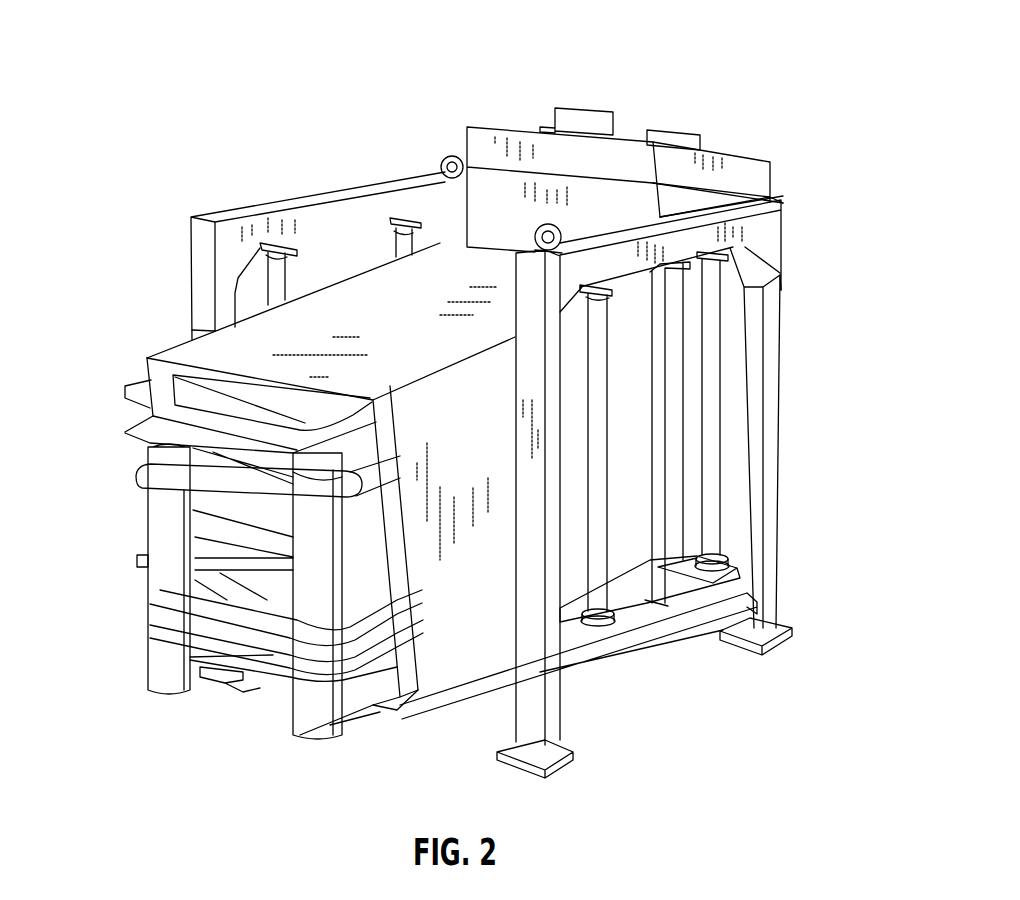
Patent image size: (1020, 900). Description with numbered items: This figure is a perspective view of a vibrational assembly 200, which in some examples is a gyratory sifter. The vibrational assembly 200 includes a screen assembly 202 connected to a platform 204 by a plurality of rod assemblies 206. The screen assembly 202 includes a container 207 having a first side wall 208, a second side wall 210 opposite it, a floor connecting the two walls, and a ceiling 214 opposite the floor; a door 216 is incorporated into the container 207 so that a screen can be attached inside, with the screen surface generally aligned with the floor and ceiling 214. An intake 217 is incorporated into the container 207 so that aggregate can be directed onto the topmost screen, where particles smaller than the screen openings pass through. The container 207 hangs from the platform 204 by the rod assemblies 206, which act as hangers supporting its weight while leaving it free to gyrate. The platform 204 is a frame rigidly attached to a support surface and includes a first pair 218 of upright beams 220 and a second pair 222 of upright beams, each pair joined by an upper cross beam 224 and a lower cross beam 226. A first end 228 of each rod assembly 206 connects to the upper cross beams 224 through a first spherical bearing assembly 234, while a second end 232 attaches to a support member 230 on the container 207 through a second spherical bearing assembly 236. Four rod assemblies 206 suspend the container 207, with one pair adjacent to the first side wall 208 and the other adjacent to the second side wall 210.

The vibrational assembly 200 is at (797, 455).
The screen assembly 202 is at (130, 634).
The platform 204 is at (753, 212).
The rod assemblies 206 is at (710, 520).
The container 207 is at (138, 355).
The first side wall 208 is at (425, 660).
The second side wall 210 is at (126, 464).
The ceiling 214 is at (473, 268).
The door 216 is at (200, 628).
The intake 217 is at (590, 118).
The first pair 218 is at (682, 122).
The upright beams 220 is at (205, 283).
The second pair 222 is at (190, 208).
The upper cross beam 224 is at (695, 245).
The lower cross beam 226 is at (643, 658).
The first end 228 is at (722, 320).
The support member 230 is at (585, 637).
The second end 232 is at (618, 618).
The first spherical bearing assemblies 234 is at (590, 292).
The second spherical bearing assemblies 236 is at (690, 565).